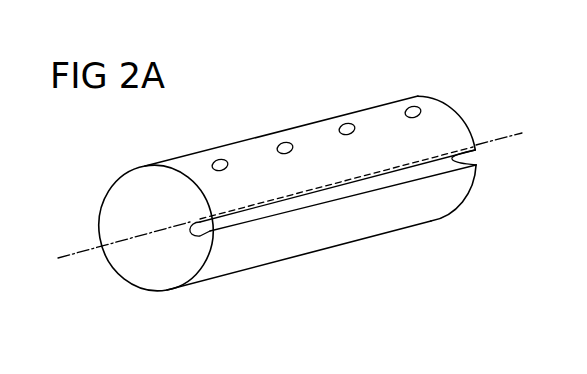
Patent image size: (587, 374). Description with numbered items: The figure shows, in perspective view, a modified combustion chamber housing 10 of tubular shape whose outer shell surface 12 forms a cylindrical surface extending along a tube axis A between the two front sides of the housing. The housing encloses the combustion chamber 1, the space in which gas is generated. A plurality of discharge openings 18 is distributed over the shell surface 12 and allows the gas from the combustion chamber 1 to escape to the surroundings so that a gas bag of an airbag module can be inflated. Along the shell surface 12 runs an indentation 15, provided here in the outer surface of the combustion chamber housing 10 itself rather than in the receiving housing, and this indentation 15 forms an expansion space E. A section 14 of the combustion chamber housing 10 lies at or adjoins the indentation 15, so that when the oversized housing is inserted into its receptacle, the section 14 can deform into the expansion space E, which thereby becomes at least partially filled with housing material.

The combustion chamber housing 10 is at (437, 92).
The shell surface 12 is at (444, 133).
The discharge openings 18 is at (346, 124).
The section 14 is at (196, 224).
The indentation 15 is at (260, 211).
The combustion chamber 1 is at (354, 286).
The expansion space E is at (387, 178).
The tube axis A is at (72, 251).